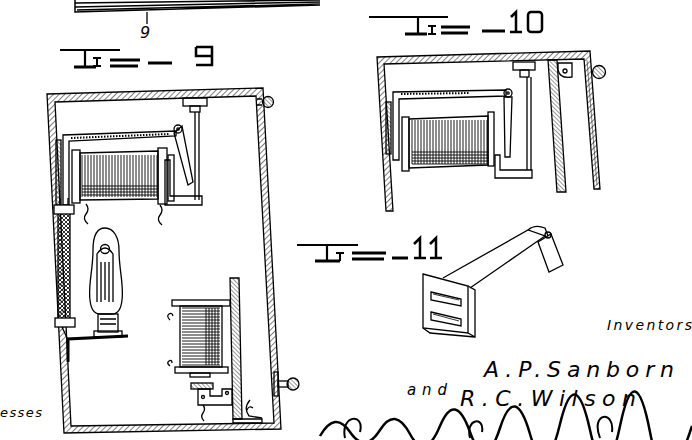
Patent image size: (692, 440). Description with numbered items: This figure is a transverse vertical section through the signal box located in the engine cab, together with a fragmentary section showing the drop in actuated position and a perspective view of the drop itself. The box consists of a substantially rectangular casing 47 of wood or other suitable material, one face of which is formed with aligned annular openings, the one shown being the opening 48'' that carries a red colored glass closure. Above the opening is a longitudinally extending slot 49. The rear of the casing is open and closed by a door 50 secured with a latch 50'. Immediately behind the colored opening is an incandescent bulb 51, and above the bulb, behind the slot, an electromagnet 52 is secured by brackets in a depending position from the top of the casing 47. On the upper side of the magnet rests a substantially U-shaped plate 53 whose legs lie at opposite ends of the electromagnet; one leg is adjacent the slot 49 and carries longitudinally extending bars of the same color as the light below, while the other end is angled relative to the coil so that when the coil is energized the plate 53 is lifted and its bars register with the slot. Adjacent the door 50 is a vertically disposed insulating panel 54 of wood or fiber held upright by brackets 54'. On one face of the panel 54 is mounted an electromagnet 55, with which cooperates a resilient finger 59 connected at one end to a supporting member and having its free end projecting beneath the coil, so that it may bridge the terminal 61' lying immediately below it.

In FIG. 9, the casing 47 is at (48, 119).
In FIG. 9, the annular opening 48'' is at (38, 269).
In FIG. 9, the slot 49 is at (52, 170).
In FIG. 10, the slot 49 is at (380, 131).
In FIG. 9, the door 50 is at (280, 135).
In FIG. 10, the door 50 is at (610, 122).
In FIG. 9, the latch 50' is at (314, 374).
In FIG. 9, the incandescent bulb 51 is at (118, 271).
In FIG. 9, the electromagnet 52 is at (96, 165).
In FIG. 10, the electromagnet 52 is at (458, 170).
In FIG. 9, the U-shaped plate 53 is at (65, 137).
In FIG. 10, the U-shaped plate 53 is at (391, 92).
In FIG. 11, the U-shaped plate 53 is at (495, 262).
In FIG. 9, the panel 54 is at (270, 350).
In FIG. 10, the panel 54 is at (530, 134).
In FIG. 9, the bracket 54' is at (280, 375).
In FIG. 10, the bracket 54' is at (597, 87).
In FIG. 9, the electromagnet 55 is at (186, 328).
In FIG. 9, the resilient finger 59 is at (191, 386).
In FIG. 9, the terminal 61' is at (190, 405).